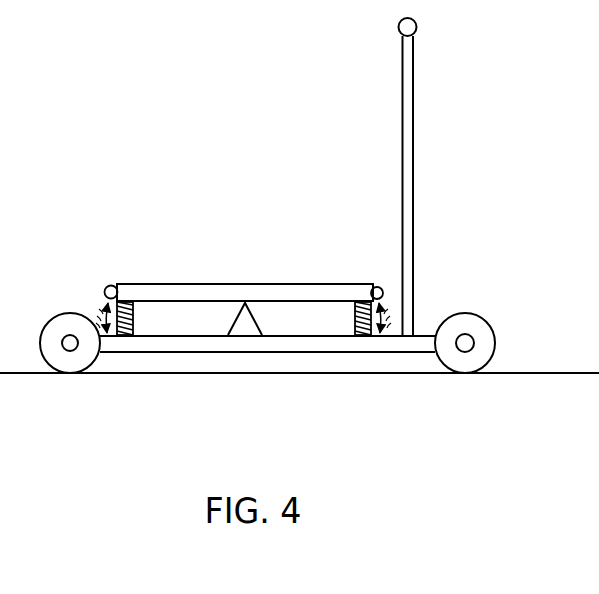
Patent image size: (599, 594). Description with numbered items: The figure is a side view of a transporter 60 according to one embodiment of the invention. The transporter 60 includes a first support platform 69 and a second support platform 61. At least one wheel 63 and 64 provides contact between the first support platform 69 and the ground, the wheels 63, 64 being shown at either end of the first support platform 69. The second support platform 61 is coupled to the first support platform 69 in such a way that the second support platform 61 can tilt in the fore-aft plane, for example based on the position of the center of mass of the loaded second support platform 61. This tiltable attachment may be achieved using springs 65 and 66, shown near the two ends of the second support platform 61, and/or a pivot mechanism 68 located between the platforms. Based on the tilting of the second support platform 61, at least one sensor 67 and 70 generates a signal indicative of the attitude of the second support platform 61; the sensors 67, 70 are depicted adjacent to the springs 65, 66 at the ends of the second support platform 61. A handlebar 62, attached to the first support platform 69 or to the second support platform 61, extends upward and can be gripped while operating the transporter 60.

The transporter 60 is at (489, 137).
The second support platform 61 is at (197, 283).
The handlebar 62 is at (414, 61).
The wheel 63 is at (58, 316).
The wheel 64 is at (478, 316).
The spring 65 is at (351, 317).
The spring 66 is at (137, 315).
The sensor 67 is at (373, 284).
The pivot mechanism 68 is at (245, 303).
The first support platform 69 is at (200, 343).
The sensor 70 is at (110, 287).